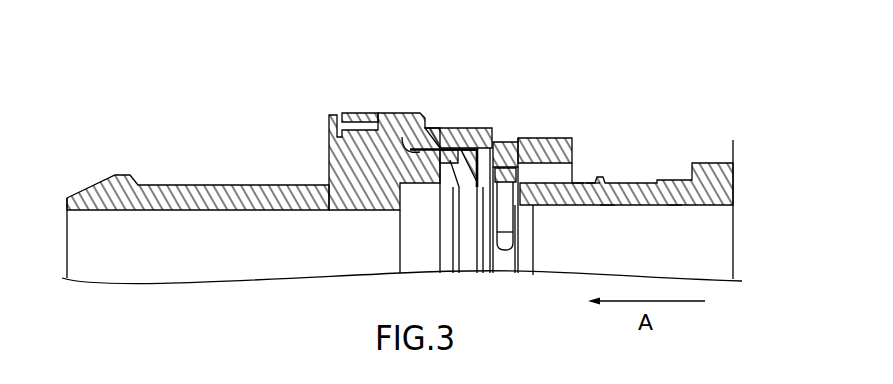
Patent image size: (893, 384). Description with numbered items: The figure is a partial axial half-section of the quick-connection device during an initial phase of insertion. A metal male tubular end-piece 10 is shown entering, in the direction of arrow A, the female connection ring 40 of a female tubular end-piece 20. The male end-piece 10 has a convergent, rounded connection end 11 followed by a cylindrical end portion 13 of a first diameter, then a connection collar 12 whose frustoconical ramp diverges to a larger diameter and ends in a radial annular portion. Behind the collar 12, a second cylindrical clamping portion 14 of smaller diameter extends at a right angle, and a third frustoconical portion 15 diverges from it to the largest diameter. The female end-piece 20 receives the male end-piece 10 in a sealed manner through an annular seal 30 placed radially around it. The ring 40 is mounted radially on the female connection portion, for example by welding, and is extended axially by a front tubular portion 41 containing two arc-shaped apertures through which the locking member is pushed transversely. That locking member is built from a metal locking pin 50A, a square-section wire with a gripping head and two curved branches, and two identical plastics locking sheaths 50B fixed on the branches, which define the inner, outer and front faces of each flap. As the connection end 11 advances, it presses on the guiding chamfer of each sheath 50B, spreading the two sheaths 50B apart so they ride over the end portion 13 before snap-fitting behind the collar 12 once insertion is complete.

The male tubular end-piece 10 is at (708, 155).
The connection end 11 is at (555, 205).
The connection collar 12 is at (592, 182).
The cylindrical end portion 13 is at (577, 182).
The second cylindrical clamping portion 14 is at (607, 205).
The third frustoconical portion 15 is at (675, 205).
The female tubular end-piece 20 is at (194, 175).
The annular seal 30 is at (457, 150).
The female connection ring 40 is at (395, 100).
The front tubular portion 41 is at (566, 123).
The metal locking pin 50A is at (517, 153).
The plastics locking sheaths 50B is at (504, 122).